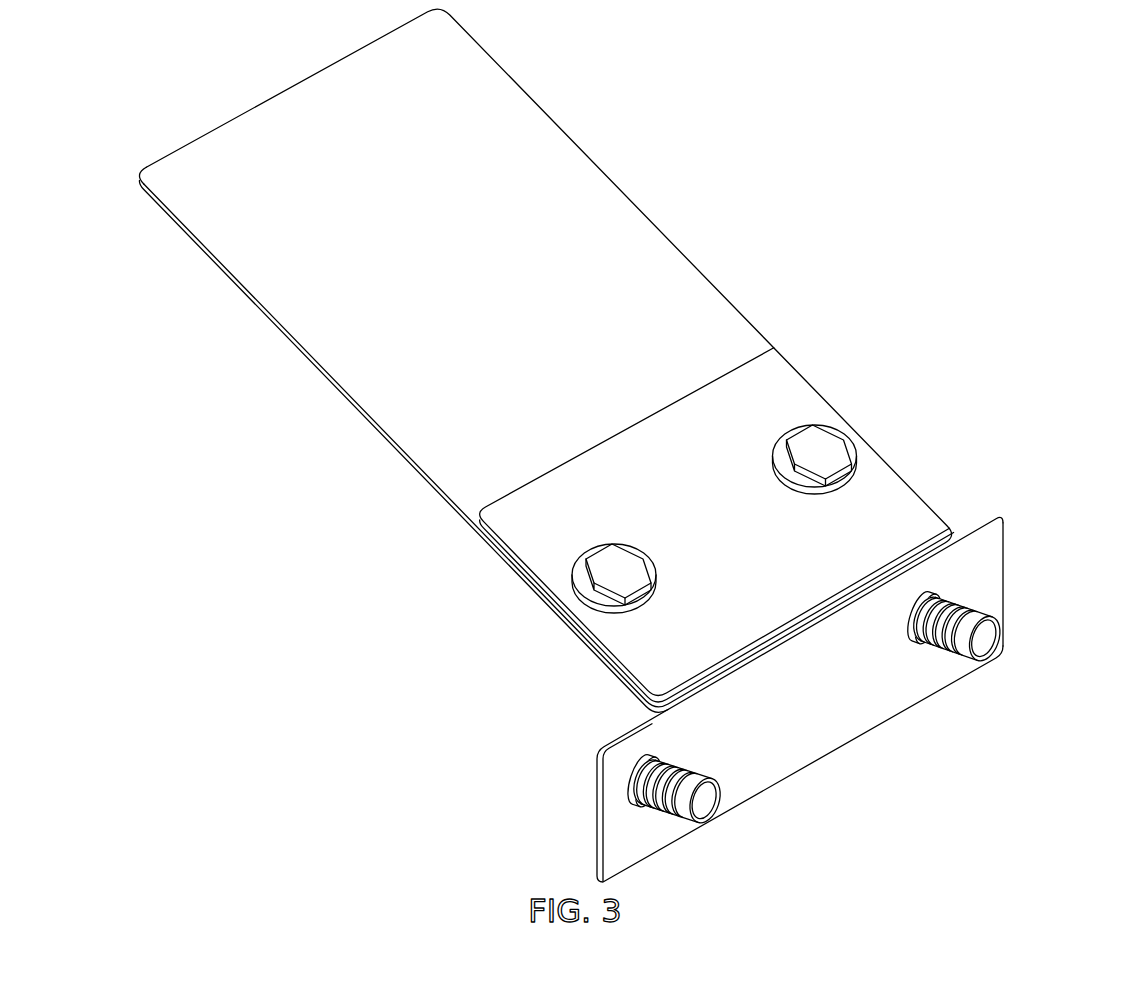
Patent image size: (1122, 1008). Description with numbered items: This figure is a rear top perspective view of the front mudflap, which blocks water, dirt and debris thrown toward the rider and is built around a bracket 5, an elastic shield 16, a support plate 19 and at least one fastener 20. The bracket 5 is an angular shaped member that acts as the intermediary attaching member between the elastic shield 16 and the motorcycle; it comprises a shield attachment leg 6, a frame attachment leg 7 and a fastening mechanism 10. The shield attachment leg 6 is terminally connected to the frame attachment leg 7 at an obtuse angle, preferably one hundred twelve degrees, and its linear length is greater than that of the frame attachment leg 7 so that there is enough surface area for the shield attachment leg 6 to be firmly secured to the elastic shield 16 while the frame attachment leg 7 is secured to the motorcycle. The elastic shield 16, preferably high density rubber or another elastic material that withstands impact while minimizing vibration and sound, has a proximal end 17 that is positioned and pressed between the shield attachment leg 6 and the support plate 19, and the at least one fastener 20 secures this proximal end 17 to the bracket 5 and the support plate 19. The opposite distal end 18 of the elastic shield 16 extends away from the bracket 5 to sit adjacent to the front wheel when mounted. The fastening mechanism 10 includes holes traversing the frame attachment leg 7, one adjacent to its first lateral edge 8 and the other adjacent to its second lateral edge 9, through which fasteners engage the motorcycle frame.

The bracket 5 is at (583, 445).
The shield attachment leg 6 is at (470, 528).
The frame attachment leg 7 is at (837, 751).
The first lateral edge 8 is at (596, 803).
The second lateral edge 9 is at (1003, 573).
The fastening mechanism 10 is at (700, 760).
The elastic shield 16 is at (591, 180).
The proximal end 17 is at (527, 592).
The distal end 18 is at (183, 165).
The support plate 19 is at (783, 366).
The fastener 20 is at (806, 436).